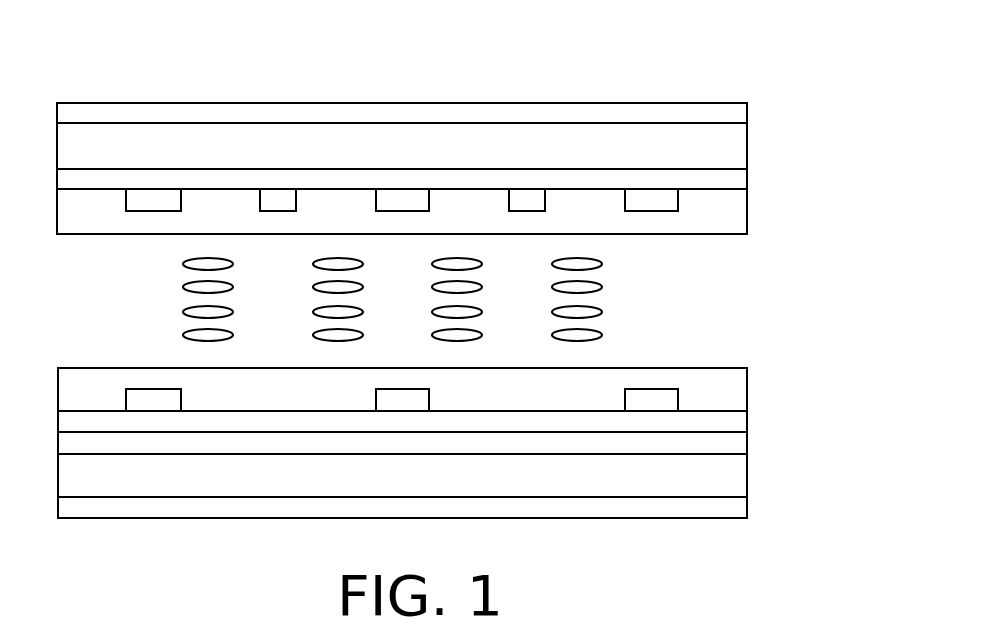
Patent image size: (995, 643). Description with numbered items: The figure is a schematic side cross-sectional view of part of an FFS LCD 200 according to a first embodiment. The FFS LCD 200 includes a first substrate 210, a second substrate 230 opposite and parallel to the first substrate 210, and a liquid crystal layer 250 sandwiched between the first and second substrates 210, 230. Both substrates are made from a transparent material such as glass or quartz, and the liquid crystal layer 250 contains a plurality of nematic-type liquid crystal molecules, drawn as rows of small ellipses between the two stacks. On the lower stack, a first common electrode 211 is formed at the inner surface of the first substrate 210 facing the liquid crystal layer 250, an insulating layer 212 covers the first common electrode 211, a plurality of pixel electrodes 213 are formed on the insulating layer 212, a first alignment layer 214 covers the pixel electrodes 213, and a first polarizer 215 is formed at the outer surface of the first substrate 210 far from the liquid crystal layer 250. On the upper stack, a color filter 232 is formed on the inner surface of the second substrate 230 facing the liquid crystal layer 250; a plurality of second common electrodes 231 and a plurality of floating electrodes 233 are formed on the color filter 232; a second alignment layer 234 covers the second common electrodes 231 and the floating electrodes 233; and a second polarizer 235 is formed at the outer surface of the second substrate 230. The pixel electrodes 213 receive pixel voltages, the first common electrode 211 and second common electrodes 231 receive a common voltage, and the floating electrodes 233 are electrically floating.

The FFS LCD 200 is at (392, 73).
The first substrate 210 is at (722, 468).
The first common electrode 211 is at (733, 445).
The insulating layer 212 is at (733, 425).
The pixel electrodes 213 is at (662, 399).
The first alignment layer 214 is at (728, 393).
The first polarizer 215 is at (733, 510).
The second substrate 230 is at (733, 143).
The second common electrodes 231 is at (531, 198).
The color filter 232 is at (733, 182).
The floating electrodes 233 is at (661, 203).
The second alignment layer 234 is at (735, 200).
The second polarizer 235 is at (737, 113).
The liquid crystal layer 250 is at (631, 244).